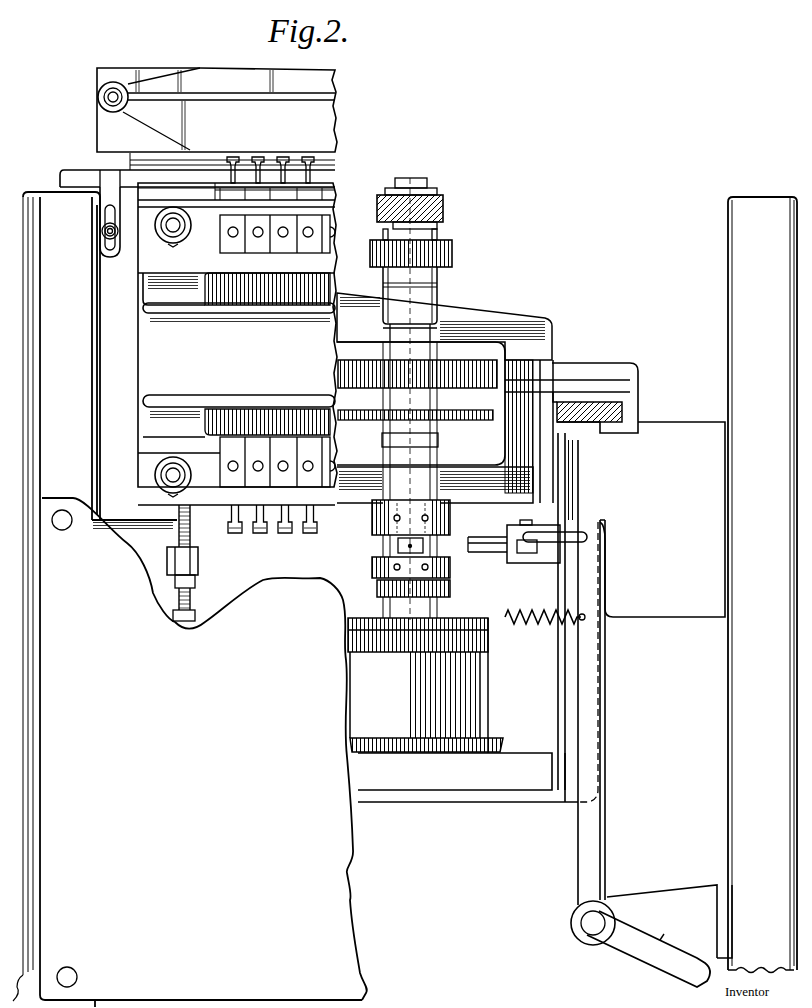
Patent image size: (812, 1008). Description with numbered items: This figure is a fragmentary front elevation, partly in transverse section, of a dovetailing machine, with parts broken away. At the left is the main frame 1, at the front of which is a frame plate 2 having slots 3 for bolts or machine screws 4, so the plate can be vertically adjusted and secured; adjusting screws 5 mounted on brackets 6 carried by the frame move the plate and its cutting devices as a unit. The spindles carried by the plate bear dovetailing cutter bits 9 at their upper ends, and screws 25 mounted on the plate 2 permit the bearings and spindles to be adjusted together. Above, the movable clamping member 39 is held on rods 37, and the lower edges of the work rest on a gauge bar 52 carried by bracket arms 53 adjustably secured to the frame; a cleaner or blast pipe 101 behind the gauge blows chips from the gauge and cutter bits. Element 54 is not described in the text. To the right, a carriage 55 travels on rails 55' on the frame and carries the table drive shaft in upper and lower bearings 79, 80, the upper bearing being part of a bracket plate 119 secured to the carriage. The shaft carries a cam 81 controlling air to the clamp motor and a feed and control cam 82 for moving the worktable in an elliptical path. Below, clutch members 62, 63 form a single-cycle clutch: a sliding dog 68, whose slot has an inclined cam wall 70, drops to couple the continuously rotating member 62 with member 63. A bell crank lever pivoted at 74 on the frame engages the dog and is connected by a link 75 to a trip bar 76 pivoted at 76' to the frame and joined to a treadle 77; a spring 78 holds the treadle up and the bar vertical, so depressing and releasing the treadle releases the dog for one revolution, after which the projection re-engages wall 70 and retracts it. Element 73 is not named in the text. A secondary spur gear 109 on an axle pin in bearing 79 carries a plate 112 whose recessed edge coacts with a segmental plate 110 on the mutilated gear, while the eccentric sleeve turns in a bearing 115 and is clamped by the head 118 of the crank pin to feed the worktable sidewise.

The main frame 1 is at (37, 193).
The frame plate 2 is at (237, 344).
The slots 3 is at (170, 247).
The bolts or machine screws 4 is at (181, 229).
The adjusting screws 5 is at (177, 600).
The brackets 6 is at (200, 562).
The dovetailing cutter bits 9 is at (249, 155).
The screws 25 is at (243, 533).
The rods 37 is at (108, 97).
The clamping member 39 is at (318, 78).
The gauge bar or plate 52 is at (70, 168).
The bracket arms 53 is at (100, 212).
The screw 54 is at (100, 238).
The bracket or carriage 55 is at (536, 618).
The rails 55' is at (624, 403).
The clutch member 62 is at (378, 585).
The clutch member 63 is at (376, 548).
The sliding dog 68 is at (380, 513).
The inclined or cam wall portion 70 is at (447, 527).
The rod 73 is at (488, 547).
The pivot 74 is at (535, 523).
The link 75 is at (552, 547).
The trip bar or rod 76 is at (655, 739).
The pivot 76' is at (576, 923).
The treadle 77 is at (673, 960).
The spring 78 is at (540, 623).
The bearing 79 is at (428, 300).
The bearing 80 is at (393, 478).
The cam 81 is at (460, 413).
The feed and control cam 82 is at (482, 367).
The cleaner or blast pipe 101 is at (330, 160).
The secondary spur gear 109 is at (453, 249).
The segmental plate 110 is at (440, 230).
The plate 112 is at (383, 232).
The bearing 115 is at (440, 212).
The head 118 is at (417, 181).
The bracket plate 119 is at (482, 308).